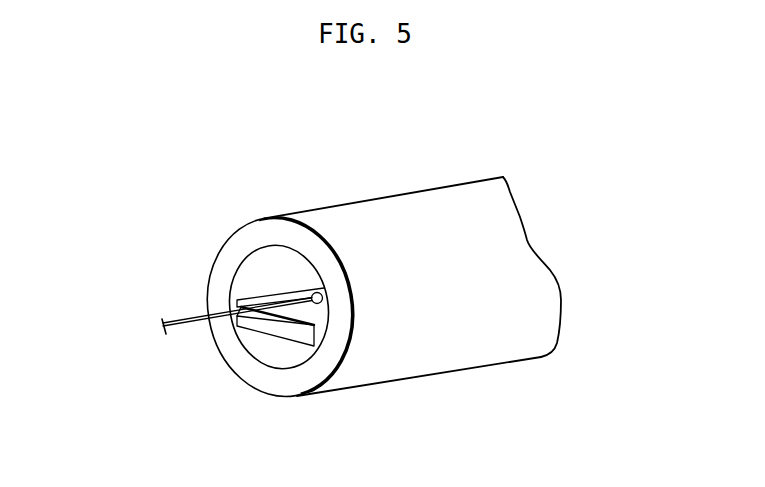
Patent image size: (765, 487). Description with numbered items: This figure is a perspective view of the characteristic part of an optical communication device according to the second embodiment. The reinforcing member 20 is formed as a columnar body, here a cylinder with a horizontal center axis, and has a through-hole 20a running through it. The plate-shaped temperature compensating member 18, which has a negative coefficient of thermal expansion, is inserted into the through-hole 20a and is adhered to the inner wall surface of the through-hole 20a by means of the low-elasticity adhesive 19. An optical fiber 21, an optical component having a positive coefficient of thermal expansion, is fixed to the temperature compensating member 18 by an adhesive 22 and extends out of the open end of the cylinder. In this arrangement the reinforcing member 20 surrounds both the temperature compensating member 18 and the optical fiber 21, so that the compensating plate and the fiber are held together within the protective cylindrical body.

The temperature compensating member 18 is at (302, 335).
The adhesive 19 is at (272, 340).
The reinforcing member 20 is at (423, 205).
The through-hole 20a is at (247, 277).
The optical fiber 21 is at (192, 318).
The adhesive 22 is at (313, 294).